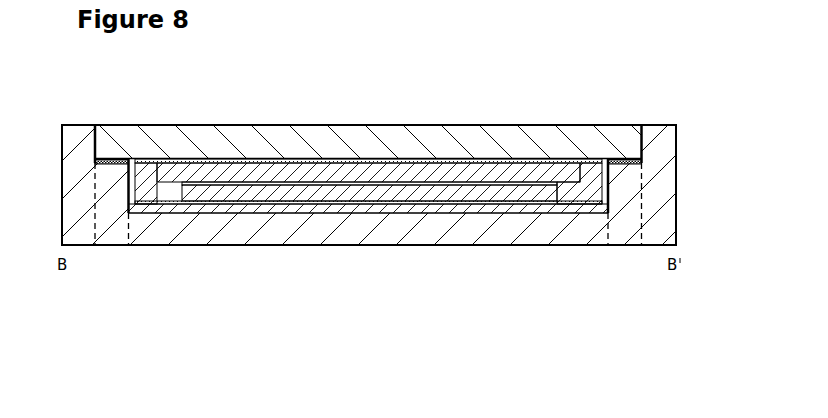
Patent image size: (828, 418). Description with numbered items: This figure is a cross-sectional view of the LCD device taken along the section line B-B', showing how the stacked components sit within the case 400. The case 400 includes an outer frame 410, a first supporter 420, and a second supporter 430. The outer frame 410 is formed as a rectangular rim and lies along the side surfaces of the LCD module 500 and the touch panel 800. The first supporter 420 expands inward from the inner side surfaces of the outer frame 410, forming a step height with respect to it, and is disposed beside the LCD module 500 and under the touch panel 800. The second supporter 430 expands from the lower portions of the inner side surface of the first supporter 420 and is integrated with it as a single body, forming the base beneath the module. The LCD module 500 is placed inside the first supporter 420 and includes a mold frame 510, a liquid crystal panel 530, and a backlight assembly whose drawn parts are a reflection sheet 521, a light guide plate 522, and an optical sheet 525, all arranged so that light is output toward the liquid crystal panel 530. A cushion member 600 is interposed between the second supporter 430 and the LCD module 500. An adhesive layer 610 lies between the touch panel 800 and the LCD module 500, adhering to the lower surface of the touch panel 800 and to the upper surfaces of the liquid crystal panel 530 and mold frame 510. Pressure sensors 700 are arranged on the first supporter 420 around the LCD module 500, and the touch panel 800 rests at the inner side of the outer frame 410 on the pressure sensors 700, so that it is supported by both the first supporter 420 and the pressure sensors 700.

The case 400 is at (207, 309).
The outer frame 410 is at (78, 237).
The first supporter 420 is at (114, 237).
The second supporter 430 is at (192, 238).
The LCD module 500 is at (369, 269).
The mold frame 510 is at (587, 195).
The reflection sheet 521 is at (365, 323).
The light guide plate 522 is at (493, 192).
The optical sheet 525 is at (433, 185).
The liquid crystal panel 530 is at (393, 175).
The cushion member 600 is at (282, 207).
The adhesive layer 610 is at (270, 159).
The pressure sensors 700 is at (105, 159).
The touch panel 800 is at (387, 135).